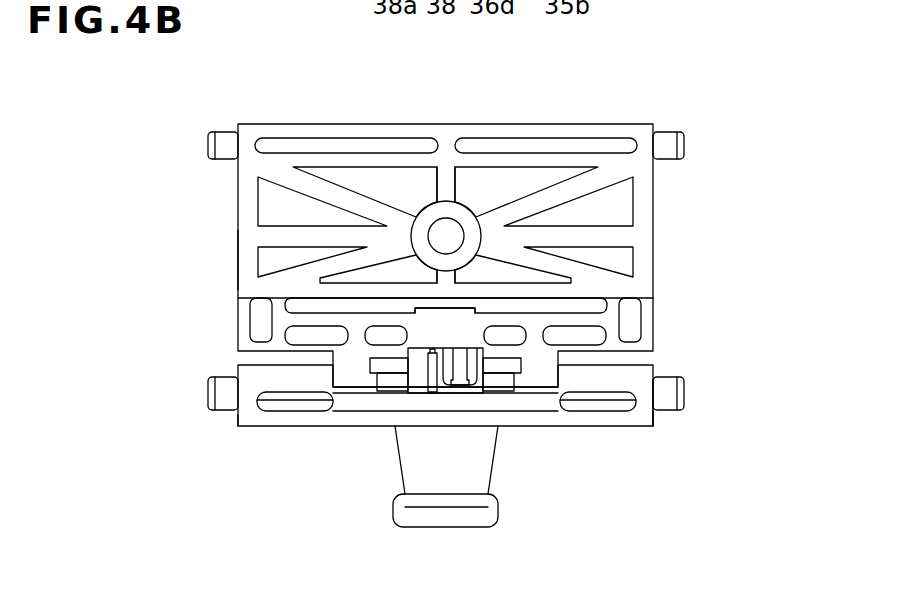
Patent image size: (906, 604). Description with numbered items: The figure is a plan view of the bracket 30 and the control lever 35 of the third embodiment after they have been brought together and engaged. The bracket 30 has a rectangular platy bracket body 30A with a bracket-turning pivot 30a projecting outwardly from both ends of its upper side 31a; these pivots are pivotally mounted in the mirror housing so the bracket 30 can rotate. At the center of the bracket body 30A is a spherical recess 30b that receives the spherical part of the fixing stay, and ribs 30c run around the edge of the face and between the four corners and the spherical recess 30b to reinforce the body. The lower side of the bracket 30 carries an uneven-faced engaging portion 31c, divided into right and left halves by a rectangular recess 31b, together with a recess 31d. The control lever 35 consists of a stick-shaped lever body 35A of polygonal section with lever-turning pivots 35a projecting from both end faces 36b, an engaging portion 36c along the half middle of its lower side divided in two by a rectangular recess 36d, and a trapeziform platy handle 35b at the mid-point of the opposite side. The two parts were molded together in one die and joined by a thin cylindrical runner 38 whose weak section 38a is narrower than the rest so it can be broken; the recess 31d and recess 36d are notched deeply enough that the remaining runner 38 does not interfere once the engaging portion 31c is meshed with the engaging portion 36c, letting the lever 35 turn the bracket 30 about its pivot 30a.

The bracket 30 is at (222, 117).
The bracket body 30A is at (236, 262).
The bracket-turning pivot 30a is at (227, 147).
The spherical recess 30b is at (466, 235).
The ribs 30c is at (353, 260).
The upper side 31a is at (404, 124).
The rectangular recess 31b is at (238, 186).
The engaging portion 31c is at (353, 363).
The recess 31d is at (498, 365).
The control lever 35 is at (292, 452).
The lever body 35A is at (598, 432).
The lever-turning pivot 35a is at (227, 392).
The handle 35b is at (480, 463).
The end faces 36b is at (235, 422).
The engaging portion 36c is at (393, 391).
The rectangular recess 36d is at (458, 386).
The runner 38 is at (433, 391).
The weak section 38a is at (430, 388).